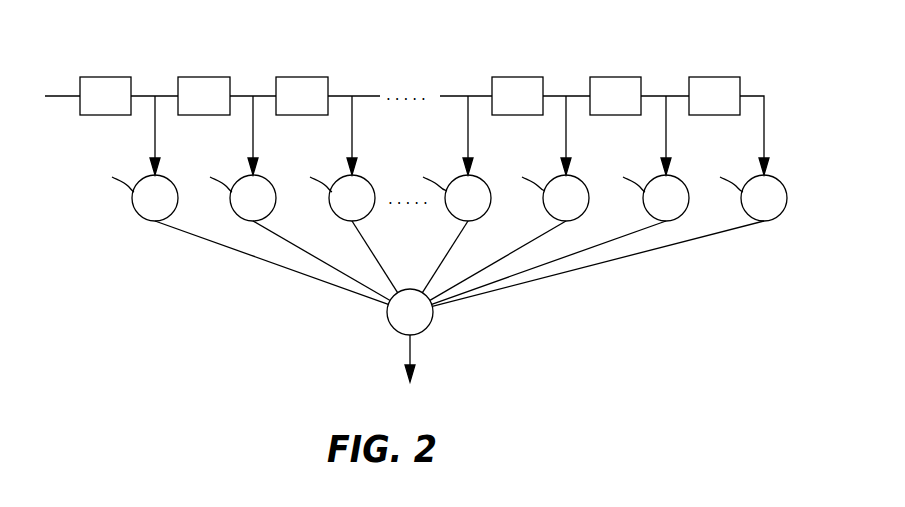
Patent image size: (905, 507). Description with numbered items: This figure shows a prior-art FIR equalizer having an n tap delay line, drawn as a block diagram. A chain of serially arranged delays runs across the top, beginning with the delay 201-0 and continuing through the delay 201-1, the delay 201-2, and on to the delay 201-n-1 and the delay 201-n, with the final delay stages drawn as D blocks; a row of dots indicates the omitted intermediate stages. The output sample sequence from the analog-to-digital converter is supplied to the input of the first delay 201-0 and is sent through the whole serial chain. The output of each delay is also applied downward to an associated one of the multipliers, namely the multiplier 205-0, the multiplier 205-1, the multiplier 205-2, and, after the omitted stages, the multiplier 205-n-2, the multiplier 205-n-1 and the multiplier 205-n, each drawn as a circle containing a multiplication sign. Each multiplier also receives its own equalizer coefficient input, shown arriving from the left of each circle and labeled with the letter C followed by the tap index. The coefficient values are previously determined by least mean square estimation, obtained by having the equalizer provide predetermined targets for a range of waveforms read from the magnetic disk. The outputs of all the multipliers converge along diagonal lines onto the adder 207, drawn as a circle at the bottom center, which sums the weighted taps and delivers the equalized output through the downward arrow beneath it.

The delay 201-0 is at (105, 77).
The delay 201-1 is at (203, 77).
The delay 201-2 is at (301, 77).
The delay 201-n-1 is at (535, 58).
The delay 201-n is at (614, 77).
The multiplier 205-0 is at (137, 209).
The multiplier 205-1 is at (270, 182).
The multiplier 205-2 is at (368, 180).
The multiplier 205-n-2 is at (450, 209).
The multiplier 205-n-1 is at (580, 181).
The multiplier 205-n is at (678, 181).
The adder 207 is at (428, 327).